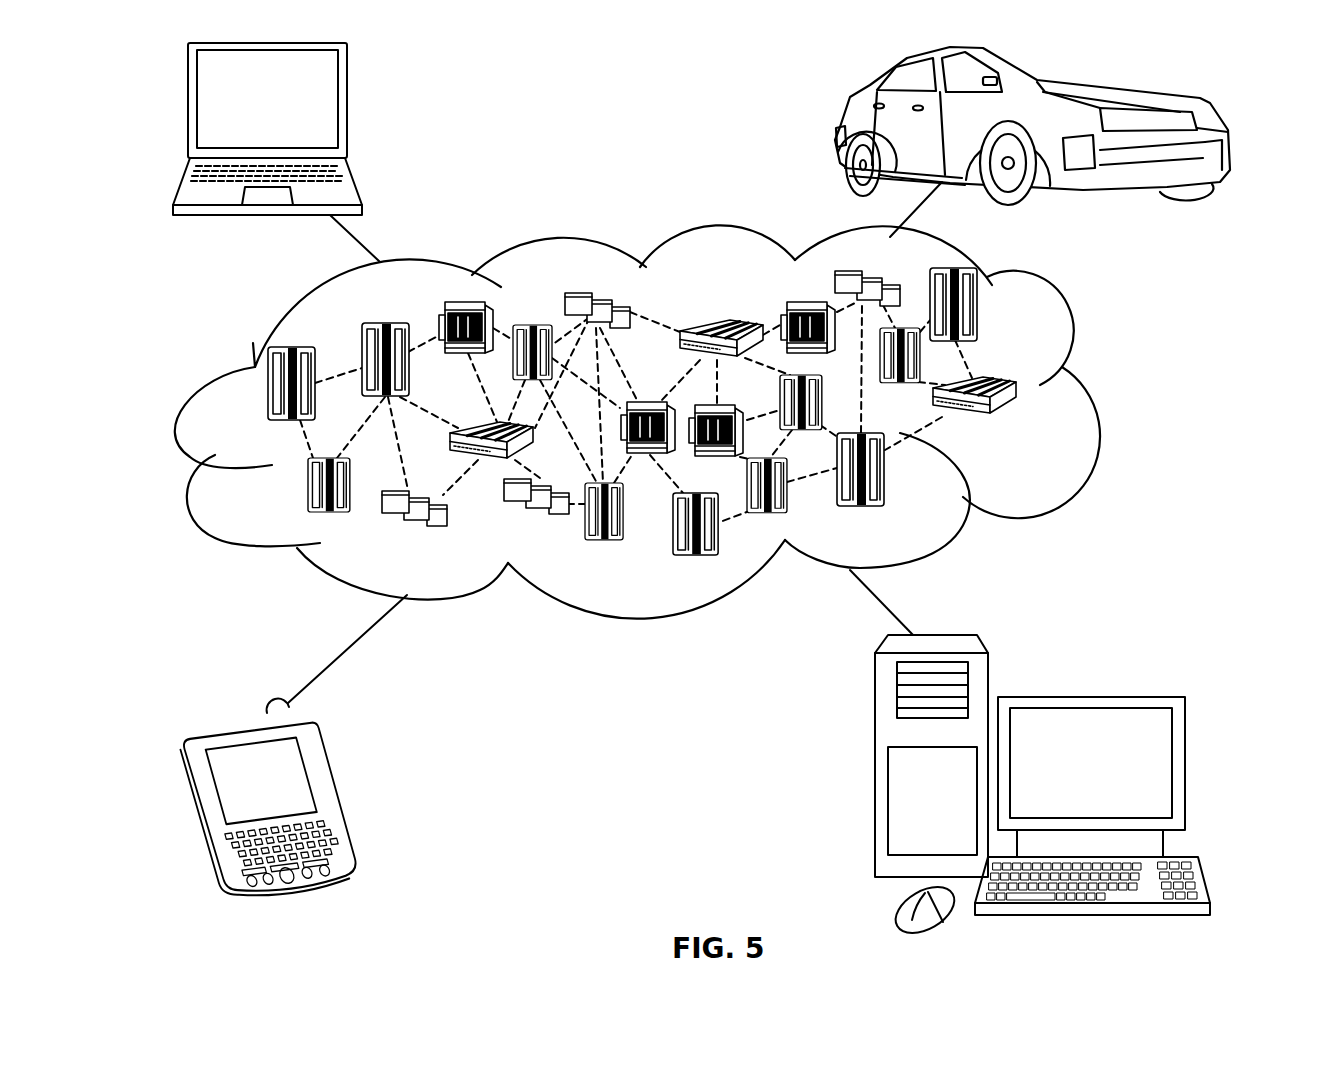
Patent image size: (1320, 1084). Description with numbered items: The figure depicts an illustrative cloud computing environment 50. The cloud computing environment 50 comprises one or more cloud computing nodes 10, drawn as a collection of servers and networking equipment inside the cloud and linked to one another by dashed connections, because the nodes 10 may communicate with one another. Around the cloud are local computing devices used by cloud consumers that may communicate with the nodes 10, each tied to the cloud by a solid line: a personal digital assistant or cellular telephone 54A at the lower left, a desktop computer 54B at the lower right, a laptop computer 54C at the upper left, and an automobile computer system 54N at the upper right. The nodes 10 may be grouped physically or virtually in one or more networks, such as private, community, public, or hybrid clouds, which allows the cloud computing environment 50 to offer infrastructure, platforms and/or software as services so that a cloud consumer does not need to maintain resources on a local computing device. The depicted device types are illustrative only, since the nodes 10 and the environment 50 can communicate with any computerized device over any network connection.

The cloud computing node 10 is at (1032, 428).
The cloud computing environment 50 is at (1088, 393).
The personal digital assistant or cellular telephone 54A is at (333, 797).
The desktop computer 54B is at (1090, 697).
The laptop computer 54C is at (347, 108).
The automobile computer system 54N is at (838, 127).